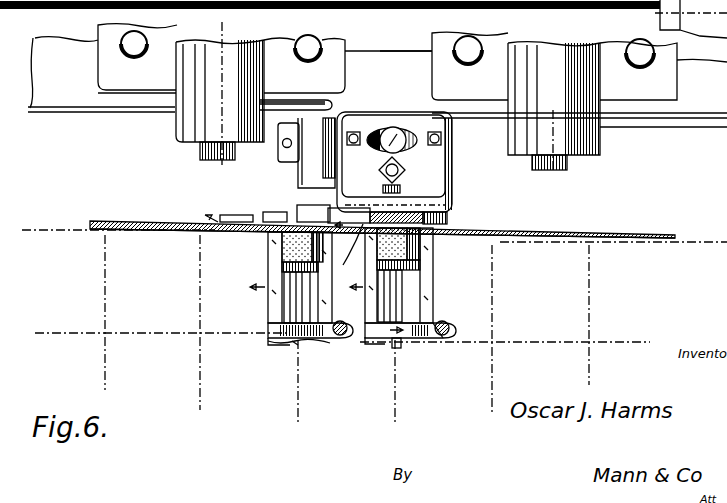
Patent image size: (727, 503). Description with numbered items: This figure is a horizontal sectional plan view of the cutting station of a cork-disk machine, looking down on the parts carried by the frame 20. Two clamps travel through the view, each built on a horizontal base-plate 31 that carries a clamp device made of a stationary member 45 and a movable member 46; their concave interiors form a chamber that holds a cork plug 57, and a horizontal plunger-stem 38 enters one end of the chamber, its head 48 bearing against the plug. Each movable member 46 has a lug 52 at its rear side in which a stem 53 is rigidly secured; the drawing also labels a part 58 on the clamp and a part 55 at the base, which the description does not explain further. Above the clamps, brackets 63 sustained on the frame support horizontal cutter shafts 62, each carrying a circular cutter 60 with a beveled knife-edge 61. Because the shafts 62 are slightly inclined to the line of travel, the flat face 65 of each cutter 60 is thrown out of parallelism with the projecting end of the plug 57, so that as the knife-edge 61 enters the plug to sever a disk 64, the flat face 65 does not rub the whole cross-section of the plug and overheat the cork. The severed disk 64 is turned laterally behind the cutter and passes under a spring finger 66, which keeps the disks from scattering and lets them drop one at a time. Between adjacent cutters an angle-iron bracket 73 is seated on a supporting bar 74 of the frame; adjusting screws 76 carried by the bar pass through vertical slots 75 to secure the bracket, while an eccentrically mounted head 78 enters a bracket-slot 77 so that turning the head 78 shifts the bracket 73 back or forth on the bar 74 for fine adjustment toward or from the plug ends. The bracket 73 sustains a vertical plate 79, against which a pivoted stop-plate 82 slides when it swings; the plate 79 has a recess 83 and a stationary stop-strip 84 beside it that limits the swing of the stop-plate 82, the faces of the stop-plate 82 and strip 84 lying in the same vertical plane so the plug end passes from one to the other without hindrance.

The frame 20 is at (95, 106).
The cutter shaft 62 is at (200, 152).
The bracket 63 is at (338, 78).
The angle-iron bracket 73 is at (461, 187).
The supporting bar 74 is at (330, 144).
The slot 75 is at (386, 186).
The adjusting screw 76 is at (381, 172).
The bracket-slot 77 is at (381, 125).
The head 78 is at (400, 131).
The vertical plate 79 is at (406, 210).
The stop-plate 82 is at (420, 236).
The recess 83 is at (360, 236).
The stationary stop-strip 84 is at (352, 220).
The cutter 60 is at (160, 223).
The beveled knife-edge 61 is at (662, 228).
The disk 64 is at (305, 222).
The flat face 65 is at (174, 233).
The spring finger 66 is at (255, 218).
The cork plug 57 is at (290, 246).
The stationary member 45 is at (276, 267).
The movable member 46 is at (436, 276).
The head 48 is at (297, 285).
The plunger 58 is at (402, 293).
The plunger-stem 38 is at (296, 300).
The lug 52 is at (458, 326).
The stem 53 is at (447, 336).
The pivot pin 55 is at (339, 340).
The base-plate 31 is at (282, 345).